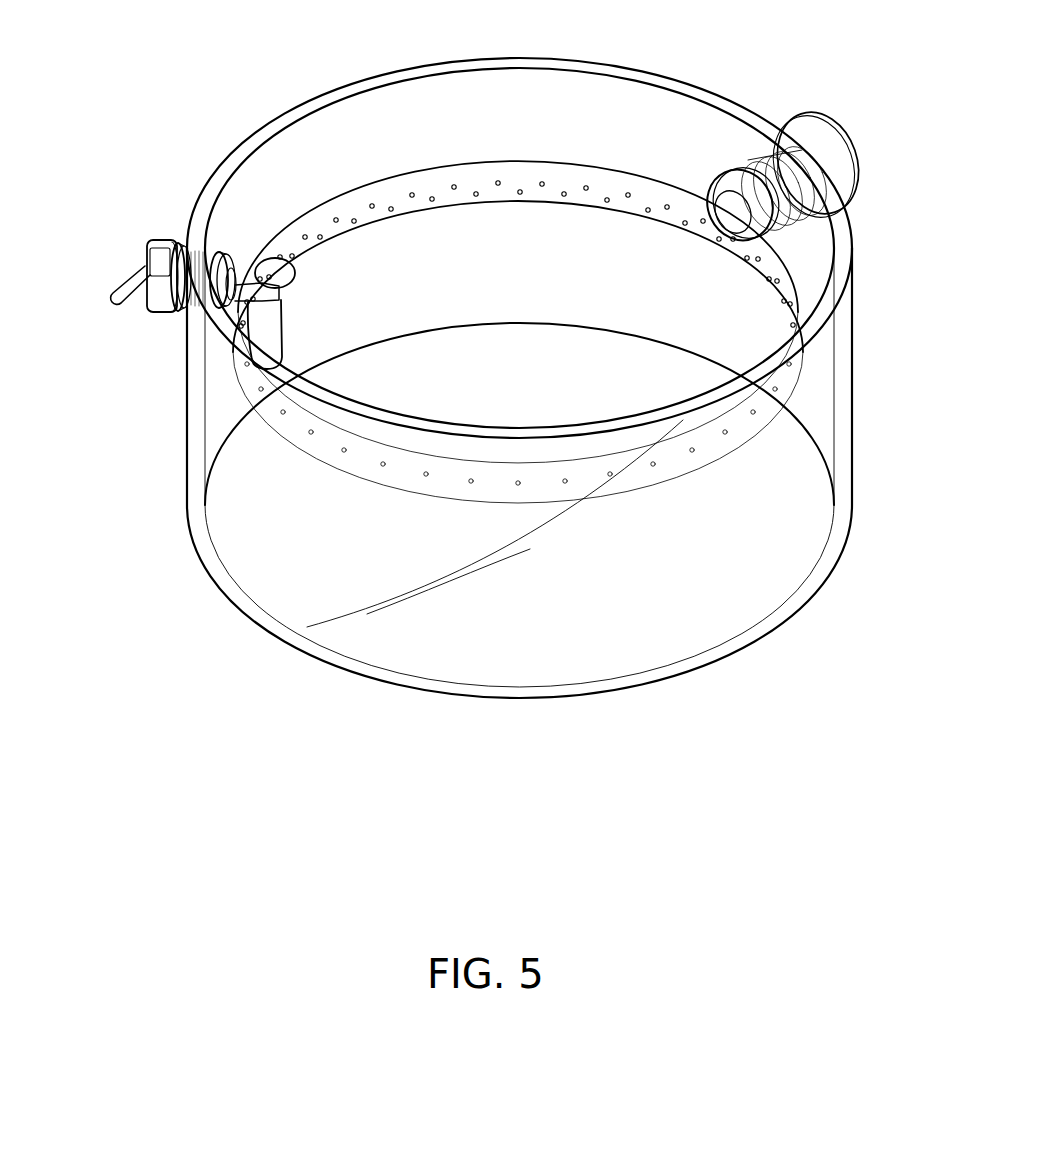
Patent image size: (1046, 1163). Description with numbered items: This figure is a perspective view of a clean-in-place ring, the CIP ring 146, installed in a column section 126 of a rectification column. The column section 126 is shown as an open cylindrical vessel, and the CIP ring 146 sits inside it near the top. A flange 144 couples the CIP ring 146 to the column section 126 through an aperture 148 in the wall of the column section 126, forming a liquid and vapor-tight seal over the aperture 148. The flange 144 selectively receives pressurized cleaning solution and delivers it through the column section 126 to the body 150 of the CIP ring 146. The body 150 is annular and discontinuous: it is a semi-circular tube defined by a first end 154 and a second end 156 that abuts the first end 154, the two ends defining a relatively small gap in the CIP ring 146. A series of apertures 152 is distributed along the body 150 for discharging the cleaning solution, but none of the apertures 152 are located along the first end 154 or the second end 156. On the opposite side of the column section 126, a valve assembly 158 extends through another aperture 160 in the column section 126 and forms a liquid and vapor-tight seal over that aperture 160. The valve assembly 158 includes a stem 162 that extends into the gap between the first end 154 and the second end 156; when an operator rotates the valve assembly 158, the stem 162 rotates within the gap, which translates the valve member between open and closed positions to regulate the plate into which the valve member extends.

The column section 126 is at (700, 535).
The flange 144 is at (808, 136).
The CIP ring 146 is at (577, 253).
The aperture 148 is at (747, 173).
The body 150 is at (773, 312).
The apertures 152 is at (417, 203).
The first end 154 is at (255, 308).
The second end 156 is at (274, 276).
The valve assembly 158 is at (150, 235).
The aperture 160 is at (203, 300).
The stem 162 is at (243, 290).